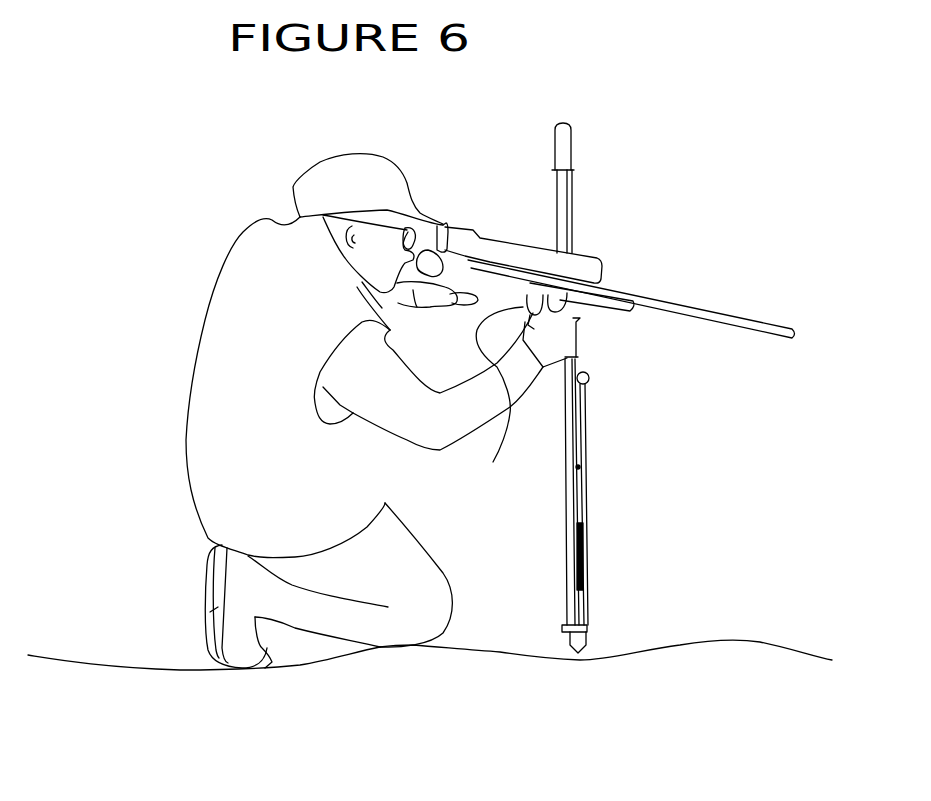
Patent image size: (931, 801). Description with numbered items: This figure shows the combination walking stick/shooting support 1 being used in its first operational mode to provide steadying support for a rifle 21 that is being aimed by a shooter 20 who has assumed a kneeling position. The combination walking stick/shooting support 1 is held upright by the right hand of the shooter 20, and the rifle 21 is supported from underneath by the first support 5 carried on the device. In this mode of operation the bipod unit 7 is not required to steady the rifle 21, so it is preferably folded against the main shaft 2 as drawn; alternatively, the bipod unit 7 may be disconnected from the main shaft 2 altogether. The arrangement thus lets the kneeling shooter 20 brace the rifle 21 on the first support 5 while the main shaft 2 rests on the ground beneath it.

The combination walking stick/shooting support 1 is at (583, 196).
The main shaft 2 is at (568, 510).
The first support 5 is at (496, 456).
The bipod unit 7 is at (583, 487).
The shooter 20 is at (255, 275).
The rifle 21 is at (603, 312).